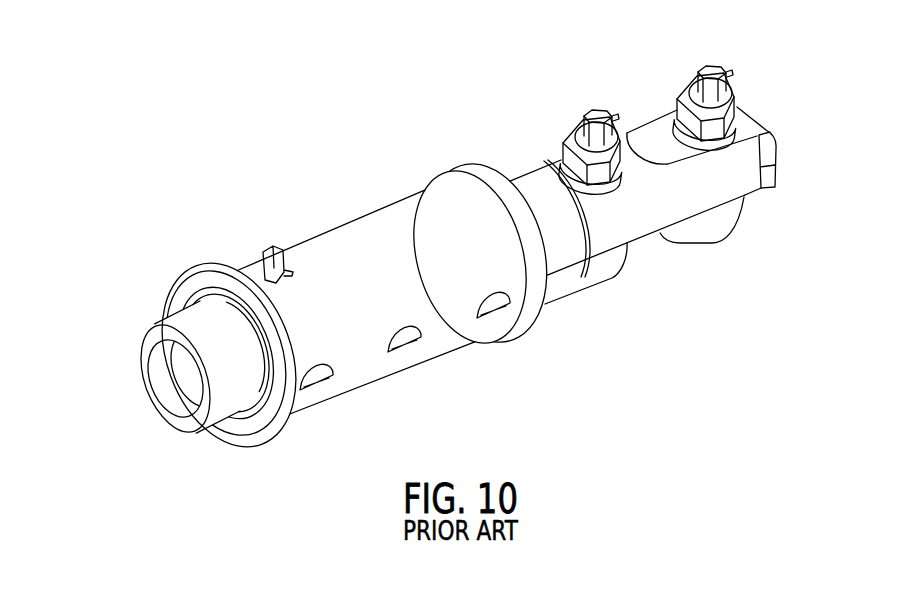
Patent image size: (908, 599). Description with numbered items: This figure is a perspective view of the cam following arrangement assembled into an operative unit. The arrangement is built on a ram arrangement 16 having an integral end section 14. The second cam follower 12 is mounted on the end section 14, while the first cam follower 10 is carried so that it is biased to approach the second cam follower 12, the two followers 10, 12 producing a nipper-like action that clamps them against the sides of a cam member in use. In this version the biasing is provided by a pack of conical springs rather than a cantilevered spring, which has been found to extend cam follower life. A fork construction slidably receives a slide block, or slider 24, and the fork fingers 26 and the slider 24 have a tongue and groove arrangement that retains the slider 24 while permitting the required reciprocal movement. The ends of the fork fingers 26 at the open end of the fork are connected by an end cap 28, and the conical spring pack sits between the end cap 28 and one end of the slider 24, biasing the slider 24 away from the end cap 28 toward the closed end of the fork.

The first cam follower 10 is at (712, 235).
The second cam follower 12 is at (598, 274).
The end section 14 is at (623, 229).
The ram arrangement 16 is at (526, 187).
The slide block (slider) 24 is at (660, 126).
The fork fingers 26 is at (745, 190).
The end cap 28 is at (776, 152).